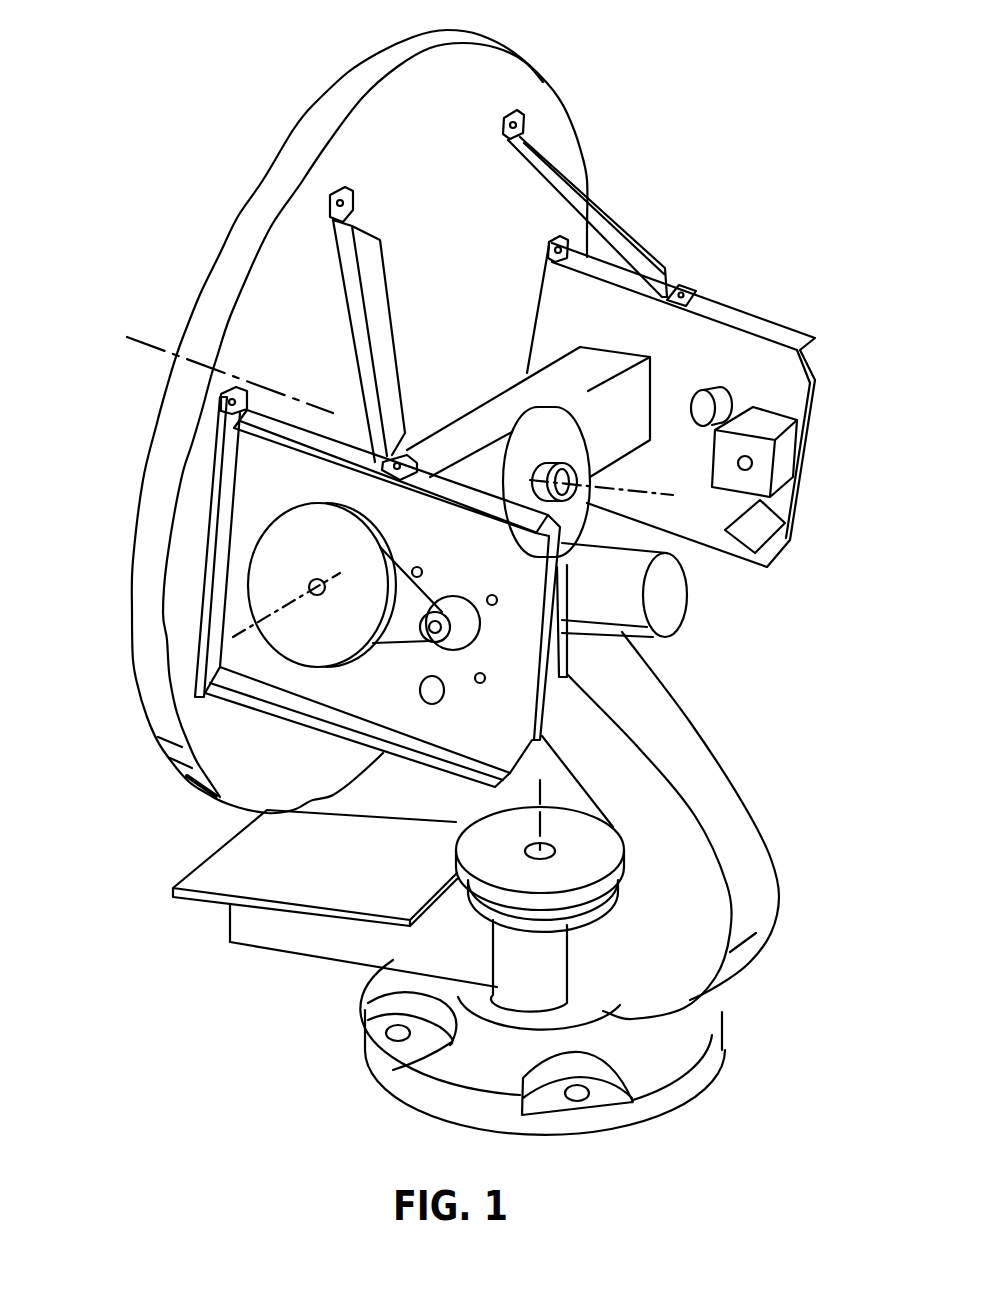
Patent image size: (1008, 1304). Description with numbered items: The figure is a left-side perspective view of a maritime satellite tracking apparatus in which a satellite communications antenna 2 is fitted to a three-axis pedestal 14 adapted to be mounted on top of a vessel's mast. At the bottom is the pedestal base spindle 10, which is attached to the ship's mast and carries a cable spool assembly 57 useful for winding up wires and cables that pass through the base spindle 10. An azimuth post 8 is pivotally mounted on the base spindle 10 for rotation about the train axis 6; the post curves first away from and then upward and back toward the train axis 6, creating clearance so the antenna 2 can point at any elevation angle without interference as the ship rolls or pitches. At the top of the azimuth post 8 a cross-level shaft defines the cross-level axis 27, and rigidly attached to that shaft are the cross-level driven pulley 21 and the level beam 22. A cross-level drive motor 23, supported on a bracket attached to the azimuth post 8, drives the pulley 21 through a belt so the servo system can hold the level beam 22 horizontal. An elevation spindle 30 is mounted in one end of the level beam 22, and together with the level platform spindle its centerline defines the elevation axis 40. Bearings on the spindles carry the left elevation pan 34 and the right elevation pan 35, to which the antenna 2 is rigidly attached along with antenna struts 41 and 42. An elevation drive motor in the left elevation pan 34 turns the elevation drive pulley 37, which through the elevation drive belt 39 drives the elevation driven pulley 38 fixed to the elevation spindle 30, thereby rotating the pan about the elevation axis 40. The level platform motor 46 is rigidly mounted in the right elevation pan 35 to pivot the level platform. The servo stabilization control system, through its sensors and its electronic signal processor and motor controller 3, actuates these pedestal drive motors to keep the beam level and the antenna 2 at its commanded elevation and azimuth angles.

The satellite communications antenna 2 is at (203, 293).
The electronic signal processor and motor controller 3 is at (253, 862).
The train axis 6 is at (543, 822).
The azimuth post 8 is at (740, 832).
The base spindle 10 is at (655, 1090).
The three-axis pedestal 14 is at (720, 683).
The cross-level driven pulley 21 is at (572, 440).
The level beam 22 is at (463, 413).
The cross-level drive motor 23 is at (667, 600).
The cross-level axis 27 is at (640, 490).
The elevation spindle 30 is at (248, 600).
The left elevation pan 34 is at (259, 477).
The right elevation pan 35 is at (817, 380).
The elevation drive pulley 37 is at (440, 640).
The elevation driven pulley 38 is at (309, 586).
The elevation drive belt 39 is at (422, 580).
The elevation axis 40 is at (277, 613).
The antenna strut 41 is at (340, 258).
The antenna strut 42 is at (620, 222).
The level platform motor 46 is at (782, 463).
The cable spool assembly 57 is at (471, 888).